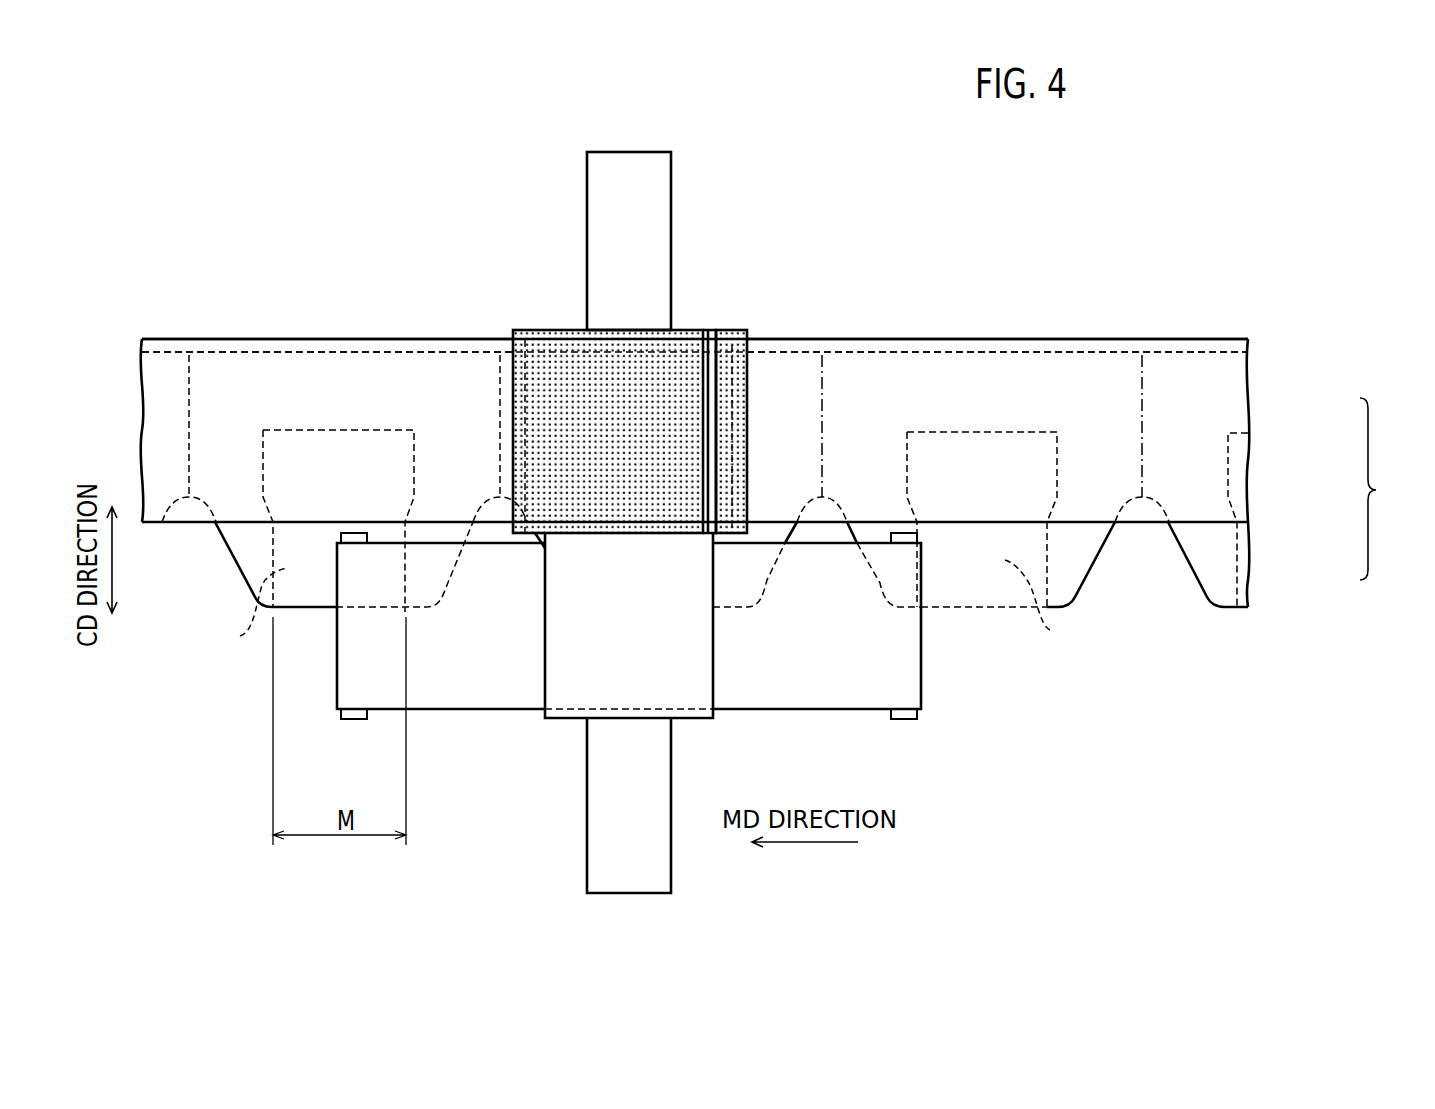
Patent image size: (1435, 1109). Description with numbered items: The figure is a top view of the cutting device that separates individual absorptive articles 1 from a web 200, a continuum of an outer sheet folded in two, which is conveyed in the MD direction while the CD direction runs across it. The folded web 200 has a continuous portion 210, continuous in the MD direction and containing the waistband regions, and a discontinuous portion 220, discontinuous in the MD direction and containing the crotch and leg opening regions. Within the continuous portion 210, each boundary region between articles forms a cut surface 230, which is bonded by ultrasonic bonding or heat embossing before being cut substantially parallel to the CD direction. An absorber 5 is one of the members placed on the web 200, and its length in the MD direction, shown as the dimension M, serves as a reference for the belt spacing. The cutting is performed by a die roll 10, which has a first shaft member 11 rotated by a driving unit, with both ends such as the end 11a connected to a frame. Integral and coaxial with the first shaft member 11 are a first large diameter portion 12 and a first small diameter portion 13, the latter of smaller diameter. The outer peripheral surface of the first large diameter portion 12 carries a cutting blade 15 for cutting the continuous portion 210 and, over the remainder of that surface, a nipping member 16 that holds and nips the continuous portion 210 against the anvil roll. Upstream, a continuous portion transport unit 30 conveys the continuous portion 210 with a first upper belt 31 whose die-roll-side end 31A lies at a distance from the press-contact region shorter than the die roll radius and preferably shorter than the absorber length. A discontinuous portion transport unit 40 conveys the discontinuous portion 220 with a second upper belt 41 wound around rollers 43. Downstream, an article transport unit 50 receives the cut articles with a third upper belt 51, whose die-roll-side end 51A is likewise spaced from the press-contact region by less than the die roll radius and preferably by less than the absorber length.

The absorptive article 1 is at (302, 352).
The absorber 5 is at (645, 607).
The die roll 10 is at (639, 314).
The first shaft member 11 is at (580, 797).
The end of first shaft member 11a is at (620, 152).
The first large diameter portion 12 is at (545, 330).
The first small diameter portion 13 is at (707, 675).
The cutting blade 15 is at (707, 330).
The nipping member 16 is at (733, 340).
The continuous portion transport unit 30 is at (1192, 336).
The first upper belt 31 is at (1017, 370).
The end of first upper belt 31A is at (733, 426).
The discontinuous portion transport unit 40 is at (672, 665).
The second upper belt 41 is at (836, 690).
The rollers 43 is at (352, 720).
The article transport unit 50 is at (398, 335).
The third upper belt 51 is at (360, 352).
The end of third upper belt 51A is at (525, 415).
The web 200 is at (1392, 489).
The continuous portion 210 is at (1253, 437).
The discontinuous portion 220 is at (1253, 572).
The cut surface 230 is at (192, 362).